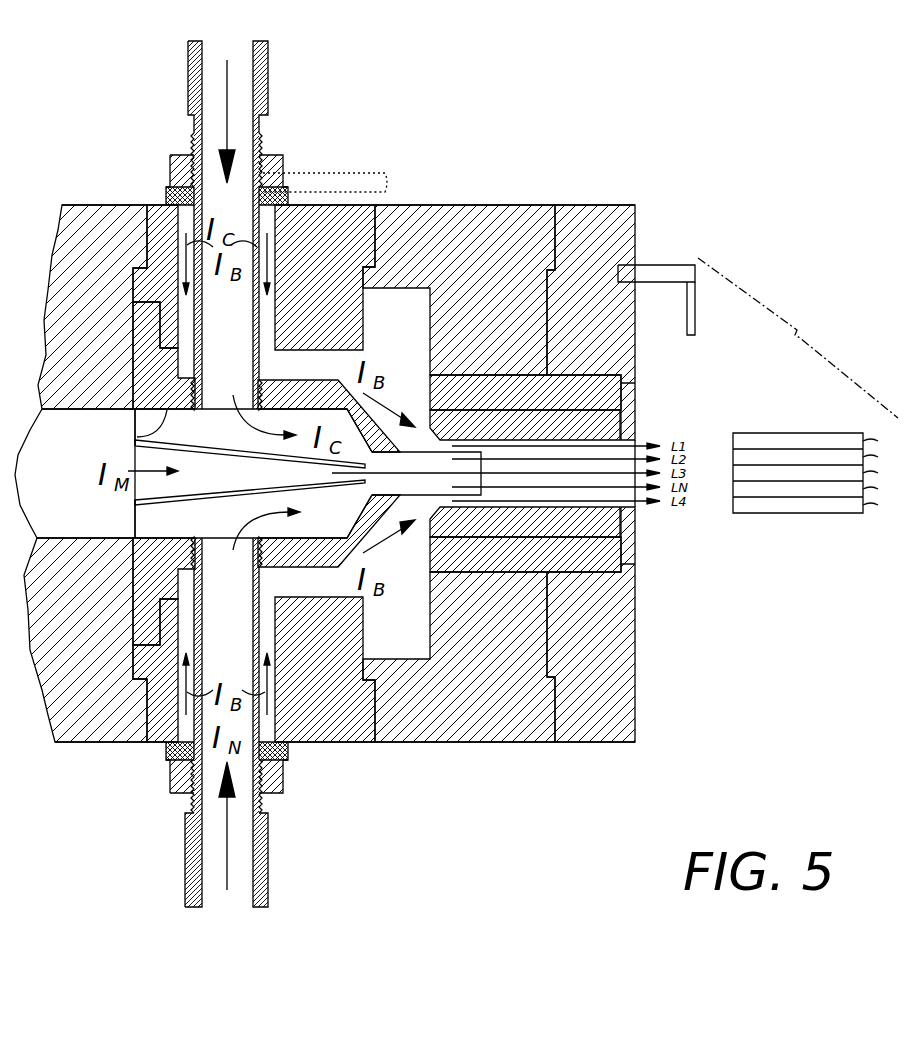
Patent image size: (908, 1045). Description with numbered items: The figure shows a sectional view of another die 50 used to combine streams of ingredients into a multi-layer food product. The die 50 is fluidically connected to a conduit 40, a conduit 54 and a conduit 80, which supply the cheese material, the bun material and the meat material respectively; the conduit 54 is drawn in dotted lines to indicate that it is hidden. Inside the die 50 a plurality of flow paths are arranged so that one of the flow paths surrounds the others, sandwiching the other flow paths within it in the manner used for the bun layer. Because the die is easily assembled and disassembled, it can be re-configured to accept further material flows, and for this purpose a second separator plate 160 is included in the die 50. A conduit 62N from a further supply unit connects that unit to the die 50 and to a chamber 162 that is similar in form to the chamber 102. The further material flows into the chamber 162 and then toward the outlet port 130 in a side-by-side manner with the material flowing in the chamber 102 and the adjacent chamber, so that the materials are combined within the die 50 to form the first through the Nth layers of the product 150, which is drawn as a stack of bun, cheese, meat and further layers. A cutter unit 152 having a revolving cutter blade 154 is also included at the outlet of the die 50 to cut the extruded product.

The conduit 40 is at (268, 53).
The conduit 54 is at (322, 173).
The die 50 is at (636, 207).
The cutter unit 152 is at (640, 265).
The revolving cutter blade 154 is at (693, 336).
The product 150 is at (745, 433).
The outlet port 130 is at (636, 508).
The chamber 102 is at (137, 431).
The second separator plate 160 is at (197, 492).
The chamber 162 is at (163, 533).
The conduit 80 is at (113, 533).
The conduit 62N is at (268, 862).